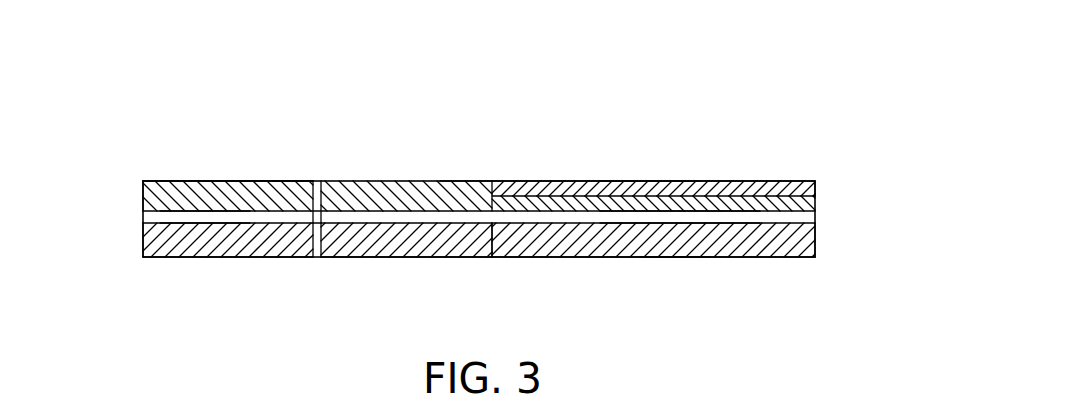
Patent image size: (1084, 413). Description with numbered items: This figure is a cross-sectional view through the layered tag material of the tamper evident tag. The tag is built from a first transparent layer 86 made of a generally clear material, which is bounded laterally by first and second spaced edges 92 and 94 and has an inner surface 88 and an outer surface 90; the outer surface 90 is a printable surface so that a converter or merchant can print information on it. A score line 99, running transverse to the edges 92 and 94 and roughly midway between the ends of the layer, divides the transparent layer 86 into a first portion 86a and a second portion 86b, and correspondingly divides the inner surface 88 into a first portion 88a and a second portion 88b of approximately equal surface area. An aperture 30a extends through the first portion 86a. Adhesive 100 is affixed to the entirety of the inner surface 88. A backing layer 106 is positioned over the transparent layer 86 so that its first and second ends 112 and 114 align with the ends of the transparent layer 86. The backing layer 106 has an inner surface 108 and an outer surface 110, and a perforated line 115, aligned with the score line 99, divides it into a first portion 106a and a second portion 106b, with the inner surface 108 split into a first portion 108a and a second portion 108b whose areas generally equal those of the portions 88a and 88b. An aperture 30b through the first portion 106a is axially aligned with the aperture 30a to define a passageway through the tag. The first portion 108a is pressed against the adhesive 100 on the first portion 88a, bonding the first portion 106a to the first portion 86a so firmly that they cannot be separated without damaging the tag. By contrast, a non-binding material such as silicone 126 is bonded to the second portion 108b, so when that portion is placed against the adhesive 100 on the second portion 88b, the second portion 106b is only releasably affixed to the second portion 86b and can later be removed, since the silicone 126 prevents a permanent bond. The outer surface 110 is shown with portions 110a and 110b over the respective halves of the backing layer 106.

The adhesive 100 is at (822, 210).
The backing layer 106 is at (822, 178).
The first portion of backing layer 106a is at (190, 182).
The second portion of backing layer 106b is at (778, 181).
The silicone 126 is at (739, 215).
The first transparent layer 86 is at (820, 259).
The first portion of transparent layer 86a is at (168, 260).
The second portion of transparent layer 86b is at (808, 260).
The aperture 30a is at (315, 258).
The aperture 30b is at (318, 181).
The inner surface of backing layer 108 is at (400, 223).
The first portion of inner surface of backing layer 108a is at (373, 226).
The second portion of inner surface of backing layer 108b is at (542, 181).
The outer surface of backing layer 110 is at (213, 181).
The top surface first portion 110a is at (260, 181).
The top surface second portion 110b is at (645, 181).
The perforated line 115 is at (477, 181).
The score line 99 is at (494, 240).
The first end of backing layer 112 is at (143, 193).
The first edge of transparent layer 92 is at (143, 240).
The second end of backing layer 114 is at (818, 188).
The second edge of transparent layer 94 is at (818, 238).
The inner surface of transparent layer 88 is at (633, 221).
The first portion of inner surface of transparent layer 88a is at (197, 221).
The second portion of inner surface of transparent layer 88b is at (690, 222).
The outer surface of transparent layer 90 is at (673, 257).